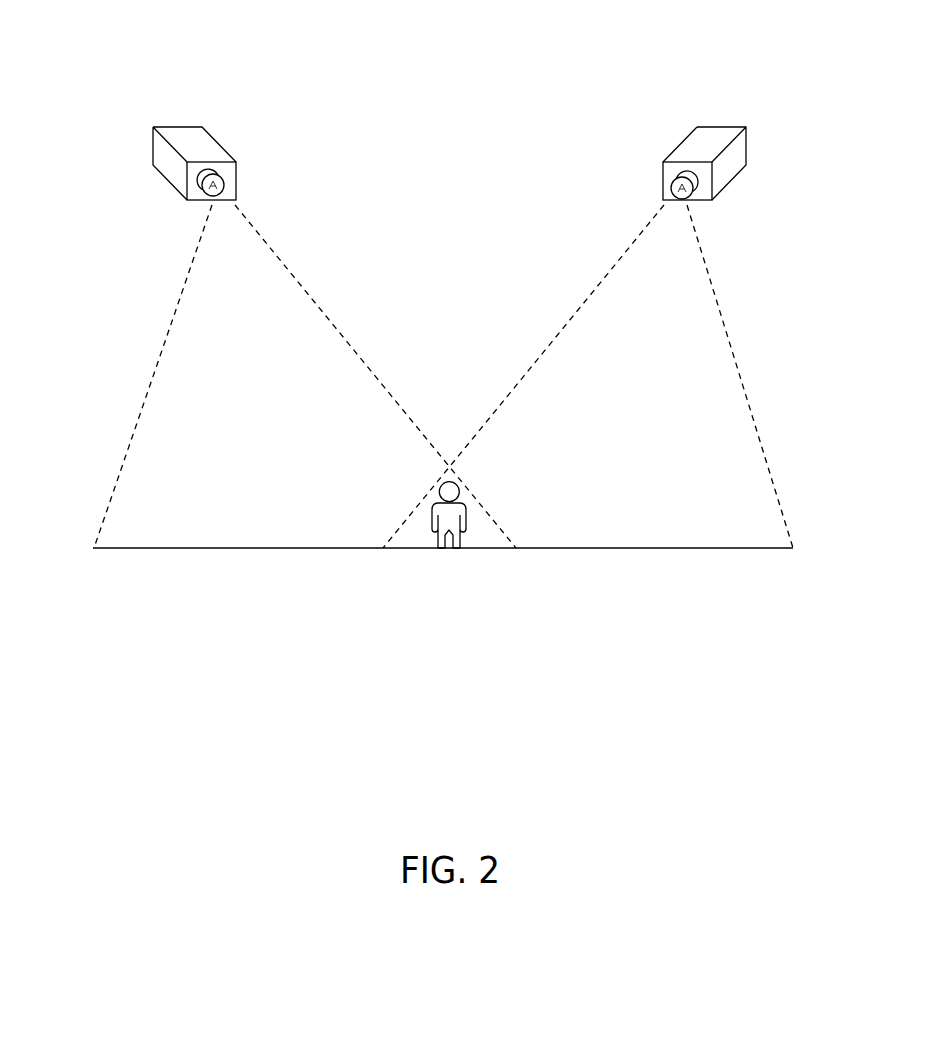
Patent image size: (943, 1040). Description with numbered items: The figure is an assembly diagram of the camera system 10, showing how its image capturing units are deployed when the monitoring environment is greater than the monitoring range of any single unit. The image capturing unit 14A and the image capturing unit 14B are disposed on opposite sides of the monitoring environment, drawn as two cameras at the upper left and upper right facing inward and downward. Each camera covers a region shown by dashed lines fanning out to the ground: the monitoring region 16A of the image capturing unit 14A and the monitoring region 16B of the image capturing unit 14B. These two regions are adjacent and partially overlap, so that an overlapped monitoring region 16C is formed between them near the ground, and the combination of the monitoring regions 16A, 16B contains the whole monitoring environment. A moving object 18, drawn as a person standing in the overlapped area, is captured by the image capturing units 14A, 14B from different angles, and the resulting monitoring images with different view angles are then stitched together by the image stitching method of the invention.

The camera system 10 is at (237, 60).
The image capturing unit 14A is at (220, 143).
The image capturing unit 14B is at (680, 143).
The monitoring region 16A is at (245, 474).
The monitoring region 16B is at (603, 474).
The overlapped monitoring region 16C is at (413, 538).
The moving object 18 is at (450, 481).